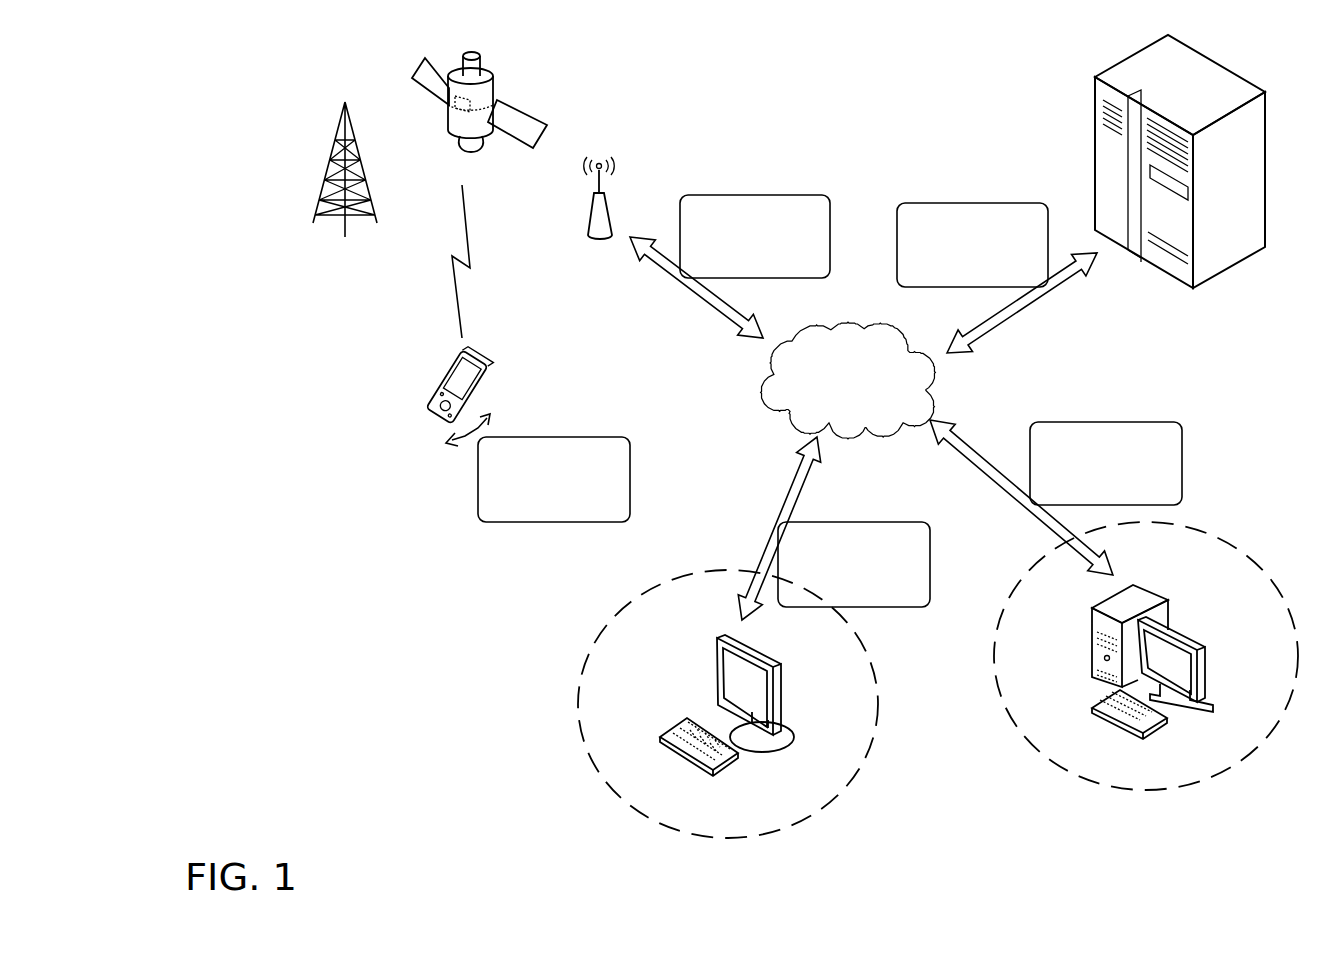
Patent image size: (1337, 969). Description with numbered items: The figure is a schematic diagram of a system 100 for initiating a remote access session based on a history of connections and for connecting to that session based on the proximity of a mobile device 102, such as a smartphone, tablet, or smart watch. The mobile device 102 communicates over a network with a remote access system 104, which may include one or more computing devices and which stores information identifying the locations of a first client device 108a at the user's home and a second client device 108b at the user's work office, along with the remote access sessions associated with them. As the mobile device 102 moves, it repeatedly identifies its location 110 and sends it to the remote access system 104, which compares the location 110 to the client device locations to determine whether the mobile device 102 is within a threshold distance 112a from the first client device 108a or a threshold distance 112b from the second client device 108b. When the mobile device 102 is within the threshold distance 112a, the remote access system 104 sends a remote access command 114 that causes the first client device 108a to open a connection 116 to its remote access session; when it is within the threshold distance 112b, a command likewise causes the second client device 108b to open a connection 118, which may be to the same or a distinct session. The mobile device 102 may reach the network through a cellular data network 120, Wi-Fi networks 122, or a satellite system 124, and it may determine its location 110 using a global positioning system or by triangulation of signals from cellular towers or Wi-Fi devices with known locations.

The system 100 is at (310, 660).
The mobile device 102 is at (443, 366).
The remote access system 104 is at (1207, 161).
The first client device 108a is at (771, 656).
The second client device 108b is at (1157, 592).
The location 110 is at (654, 358).
The threshold distance 112a is at (607, 627).
The threshold distance 112b is at (1020, 580).
The remote access command 114 is at (1000, 267).
The connection 116 is at (830, 528).
The connection 118 is at (1052, 489).
The cellular data network 120 is at (321, 204).
The Wi-Fi networks 122 is at (611, 208).
The satellite system 124 is at (519, 106).